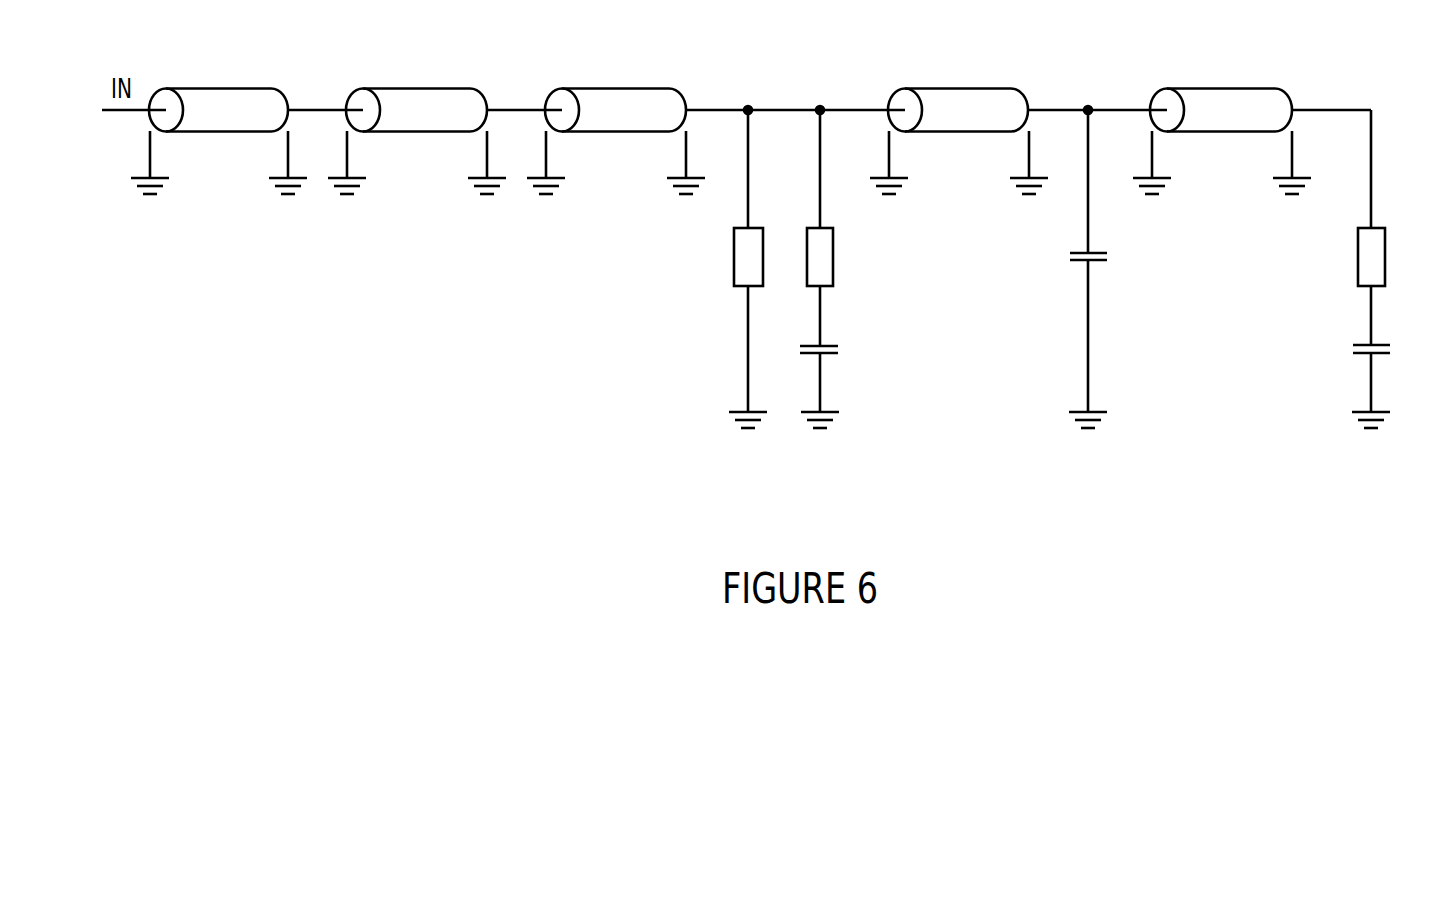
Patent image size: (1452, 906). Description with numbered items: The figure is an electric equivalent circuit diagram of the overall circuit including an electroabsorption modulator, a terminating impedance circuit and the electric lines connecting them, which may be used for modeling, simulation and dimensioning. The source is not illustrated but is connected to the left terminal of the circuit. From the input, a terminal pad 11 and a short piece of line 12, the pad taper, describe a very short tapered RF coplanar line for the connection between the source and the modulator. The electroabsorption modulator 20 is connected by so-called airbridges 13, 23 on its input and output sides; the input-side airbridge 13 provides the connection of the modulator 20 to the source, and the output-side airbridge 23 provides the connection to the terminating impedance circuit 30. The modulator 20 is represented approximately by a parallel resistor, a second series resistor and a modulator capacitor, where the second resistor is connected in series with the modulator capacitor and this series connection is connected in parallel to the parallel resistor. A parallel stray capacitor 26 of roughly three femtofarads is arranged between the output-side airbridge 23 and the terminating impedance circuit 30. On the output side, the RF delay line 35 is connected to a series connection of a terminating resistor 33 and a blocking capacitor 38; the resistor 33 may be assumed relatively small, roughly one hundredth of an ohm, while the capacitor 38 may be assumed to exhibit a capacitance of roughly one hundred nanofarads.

The terminal pad 11 is at (280, 92).
The pad taper 12 is at (479, 92).
The input-side airbridge 13 is at (678, 92).
The electroabsorption modulator 20 is at (858, 437).
The output-side airbridge 23 is at (1020, 92).
The parallel stray capacitor 26 is at (1081, 263).
The terminating impedance circuit 30 is at (1286, 256).
The resistor 33 is at (1386, 253).
The RF delay line 35 is at (1284, 92).
The capacitor 38 is at (1346, 380).